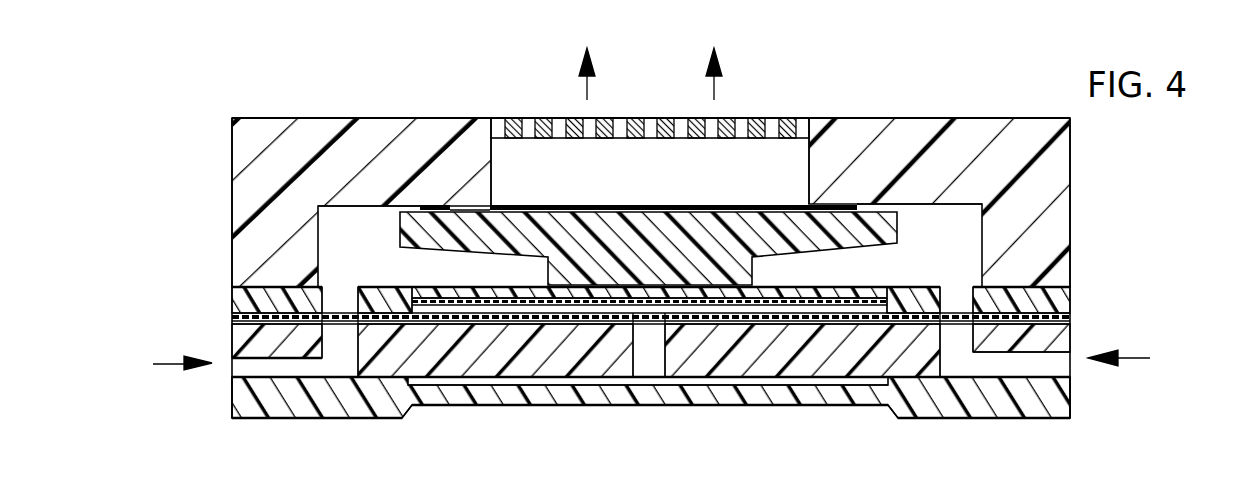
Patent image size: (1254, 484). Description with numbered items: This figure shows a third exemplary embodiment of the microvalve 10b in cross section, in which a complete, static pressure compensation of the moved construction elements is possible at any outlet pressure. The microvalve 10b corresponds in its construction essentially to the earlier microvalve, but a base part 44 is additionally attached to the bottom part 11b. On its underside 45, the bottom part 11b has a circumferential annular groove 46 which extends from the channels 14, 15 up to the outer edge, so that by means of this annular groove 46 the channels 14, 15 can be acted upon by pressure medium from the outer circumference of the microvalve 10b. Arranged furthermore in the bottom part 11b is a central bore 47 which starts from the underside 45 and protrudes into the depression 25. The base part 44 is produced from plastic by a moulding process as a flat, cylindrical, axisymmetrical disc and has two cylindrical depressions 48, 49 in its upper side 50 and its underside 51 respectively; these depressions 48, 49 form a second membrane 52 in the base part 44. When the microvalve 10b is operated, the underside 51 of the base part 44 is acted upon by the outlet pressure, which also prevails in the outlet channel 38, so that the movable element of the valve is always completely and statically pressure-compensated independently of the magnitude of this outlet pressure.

The microvalve 10b is at (1096, 186).
The bottom part 11b is at (1094, 331).
The outlet channel 38 is at (493, 157).
The depression 25 is at (828, 312).
The underside 45 is at (511, 377).
The circumferential annular groove 46 is at (265, 360).
The channel 14 is at (343, 337).
The central bore 47 is at (637, 348).
The channel 15 is at (953, 333).
The upper side 50 is at (1018, 370).
The second membrane 52 is at (562, 397).
The depression 48 is at (813, 380).
The depression 49 is at (850, 407).
The underside 51 is at (997, 417).
The base part 44 is at (1095, 423).